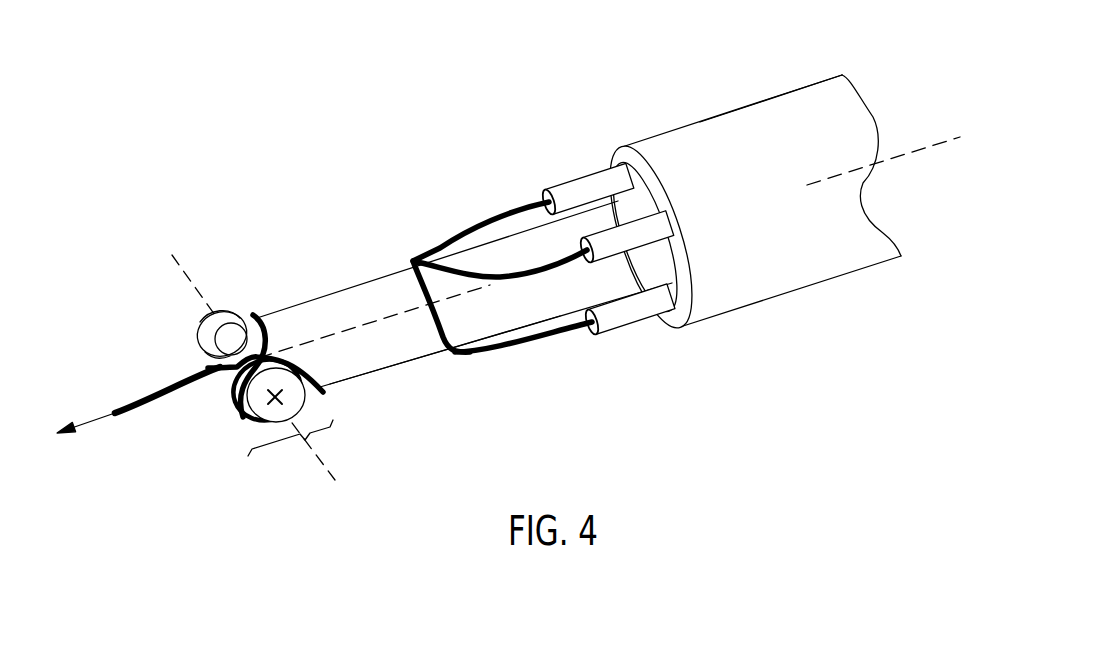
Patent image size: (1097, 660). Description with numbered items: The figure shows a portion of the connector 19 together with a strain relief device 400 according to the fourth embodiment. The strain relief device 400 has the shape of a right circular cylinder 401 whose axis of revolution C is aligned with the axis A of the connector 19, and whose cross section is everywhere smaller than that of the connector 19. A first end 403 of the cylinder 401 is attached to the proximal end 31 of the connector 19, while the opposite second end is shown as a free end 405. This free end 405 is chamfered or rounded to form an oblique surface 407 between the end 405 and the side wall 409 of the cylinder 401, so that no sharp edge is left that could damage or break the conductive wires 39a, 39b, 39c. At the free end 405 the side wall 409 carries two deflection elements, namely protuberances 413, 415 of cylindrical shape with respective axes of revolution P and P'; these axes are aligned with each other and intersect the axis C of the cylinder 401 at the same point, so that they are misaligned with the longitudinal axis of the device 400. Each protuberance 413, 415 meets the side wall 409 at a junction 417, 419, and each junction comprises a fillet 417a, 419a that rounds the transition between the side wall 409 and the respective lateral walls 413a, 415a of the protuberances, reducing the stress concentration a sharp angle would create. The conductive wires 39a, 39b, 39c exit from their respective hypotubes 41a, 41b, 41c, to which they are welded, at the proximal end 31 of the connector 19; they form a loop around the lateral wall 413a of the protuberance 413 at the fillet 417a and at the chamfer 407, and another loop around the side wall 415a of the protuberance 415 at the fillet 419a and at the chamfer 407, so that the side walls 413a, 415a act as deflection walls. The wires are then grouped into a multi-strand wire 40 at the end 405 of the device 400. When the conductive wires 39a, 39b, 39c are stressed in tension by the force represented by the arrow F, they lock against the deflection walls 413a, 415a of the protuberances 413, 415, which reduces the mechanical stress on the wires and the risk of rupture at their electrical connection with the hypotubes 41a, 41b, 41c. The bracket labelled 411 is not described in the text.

The connector 19 is at (750, 118).
The axis of the connector A is at (933, 140).
The proximal end of the connector 31 is at (653, 183).
The hypotube 41a is at (598, 180).
The hypotube 41b is at (675, 216).
The hypotube 41c is at (650, 307).
The first end of the cylinder 403 is at (670, 265).
The conductive wire 39a is at (487, 213).
The conductive wire 39b is at (517, 272).
The conductive wire 39c is at (530, 347).
The strain relief device 400 is at (491, 269).
The cylinder 401 is at (405, 370).
The side wall of the cylinder 409 is at (310, 310).
The axis of revolution C is at (370, 322).
The junction 417 is at (270, 308).
The fillet 417a is at (257, 316).
The oblique surface (chamfer) 407 is at (230, 338).
The protuberance 413 is at (207, 328).
The lateral wall of protuberance 413 413a is at (215, 330).
The free end of the cylinder 405 is at (213, 358).
The force arrow F is at (93, 413).
The multi-strand wire 40 is at (132, 417).
The protuberance 415 is at (263, 407).
The side wall of protuberance 415 415a is at (230, 408).
The clamp 411 is at (249, 434).
The junction 419 is at (330, 400).
The fillet 419a is at (330, 385).
The axis of revolution of protuberance 413 P is at (181, 255).
The axis of revolution of protuberance 415 P' is at (329, 445).